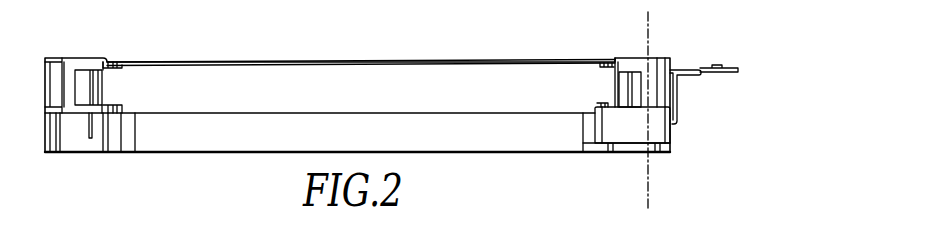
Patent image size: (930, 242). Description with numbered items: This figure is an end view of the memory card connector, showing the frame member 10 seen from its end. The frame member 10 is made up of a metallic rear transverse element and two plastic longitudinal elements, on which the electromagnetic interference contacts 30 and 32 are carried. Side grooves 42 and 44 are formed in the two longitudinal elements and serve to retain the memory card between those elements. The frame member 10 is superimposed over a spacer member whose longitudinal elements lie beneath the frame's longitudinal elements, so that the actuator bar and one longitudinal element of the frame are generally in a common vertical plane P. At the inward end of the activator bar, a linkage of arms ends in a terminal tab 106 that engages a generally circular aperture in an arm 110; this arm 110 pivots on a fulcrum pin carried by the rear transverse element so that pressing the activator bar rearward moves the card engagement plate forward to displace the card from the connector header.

The frame member 10 is at (705, 87).
The electromagnetic interference (EMI) contact 30 is at (101, 90).
The electromagnetic interference (EMI) contact 32 is at (628, 90).
The side groove 42 is at (105, 83).
The side groove 44 is at (596, 80).
The terminal tab 106 is at (716, 67).
The arm 110 is at (689, 70).
The common vertical plane P is at (651, 162).